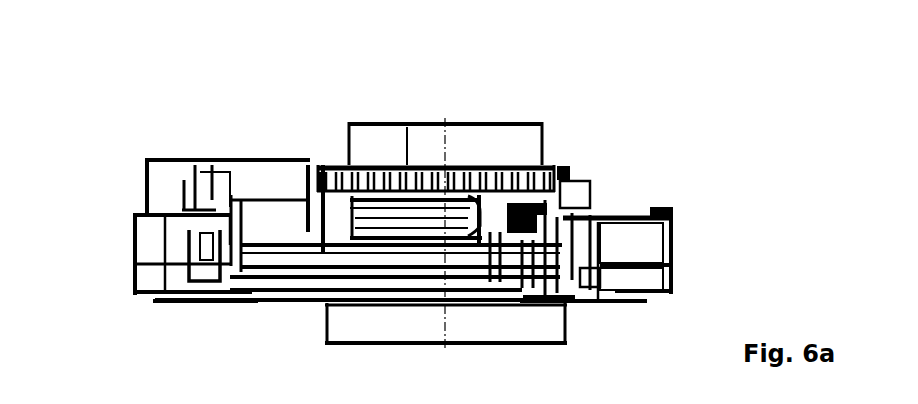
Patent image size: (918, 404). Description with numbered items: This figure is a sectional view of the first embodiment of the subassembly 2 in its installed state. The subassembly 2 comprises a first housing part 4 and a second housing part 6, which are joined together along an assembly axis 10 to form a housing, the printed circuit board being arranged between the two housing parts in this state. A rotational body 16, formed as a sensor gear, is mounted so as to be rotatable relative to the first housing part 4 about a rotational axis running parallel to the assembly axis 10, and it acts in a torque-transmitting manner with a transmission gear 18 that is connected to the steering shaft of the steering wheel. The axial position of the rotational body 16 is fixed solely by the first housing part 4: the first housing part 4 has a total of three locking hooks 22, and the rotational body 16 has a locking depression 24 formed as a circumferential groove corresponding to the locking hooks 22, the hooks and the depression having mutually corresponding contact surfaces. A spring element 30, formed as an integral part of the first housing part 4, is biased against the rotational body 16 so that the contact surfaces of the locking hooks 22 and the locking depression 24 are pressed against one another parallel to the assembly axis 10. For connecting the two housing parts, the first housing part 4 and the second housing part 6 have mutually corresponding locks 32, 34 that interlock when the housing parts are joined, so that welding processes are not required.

The subassembly 2 is at (707, 51).
The first housing part 4 is at (660, 233).
The second housing part 6 is at (645, 280).
The assembly axis 10 is at (337, 180).
The rotational body 16 is at (445, 137).
The transmission gear 18 is at (557, 178).
The locking hooks 22 is at (480, 215).
The locking depression 24 is at (347, 220).
The spring element 30 is at (412, 233).
The lock 32 is at (210, 243).
The lock 34 is at (192, 235).